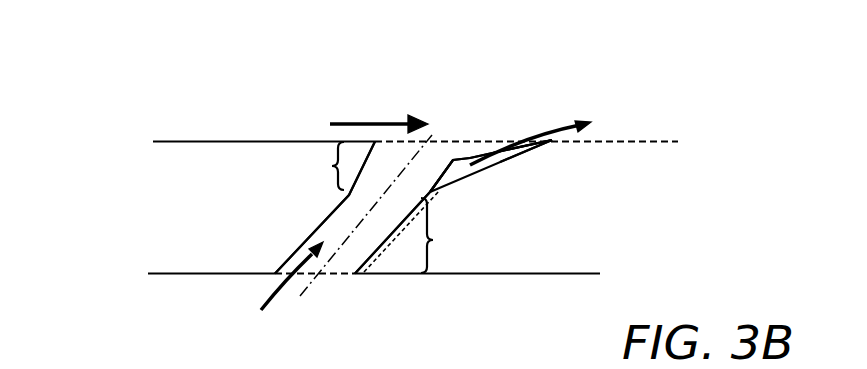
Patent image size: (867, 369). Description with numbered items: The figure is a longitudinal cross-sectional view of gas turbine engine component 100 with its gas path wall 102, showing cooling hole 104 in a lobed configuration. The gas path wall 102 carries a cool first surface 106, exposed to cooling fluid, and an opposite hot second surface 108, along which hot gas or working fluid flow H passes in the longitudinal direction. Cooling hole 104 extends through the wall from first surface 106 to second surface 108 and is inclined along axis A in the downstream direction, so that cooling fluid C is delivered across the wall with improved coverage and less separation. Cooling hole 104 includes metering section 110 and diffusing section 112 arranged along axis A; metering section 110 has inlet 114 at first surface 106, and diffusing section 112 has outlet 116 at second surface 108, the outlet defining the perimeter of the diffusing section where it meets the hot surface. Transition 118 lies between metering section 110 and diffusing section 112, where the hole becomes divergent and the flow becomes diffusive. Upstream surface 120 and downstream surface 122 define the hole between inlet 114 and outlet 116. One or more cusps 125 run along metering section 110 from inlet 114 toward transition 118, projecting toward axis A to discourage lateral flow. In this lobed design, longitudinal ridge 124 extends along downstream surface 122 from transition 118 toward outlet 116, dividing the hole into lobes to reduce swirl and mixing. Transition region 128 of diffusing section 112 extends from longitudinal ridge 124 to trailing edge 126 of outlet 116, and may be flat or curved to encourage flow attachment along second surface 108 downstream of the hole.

The gas turbine engine component 100 is at (86, 97).
The gas path wall 102 is at (237, 190).
The cooling hole 104 is at (397, 224).
The first surface 106 is at (511, 275).
The second surface 108 is at (240, 141).
The metering section 110 is at (448, 235).
The diffusing section 112 is at (317, 166).
The inlet 114 is at (334, 278).
The outlet 116 is at (503, 139).
The transition 118 is at (341, 196).
The upstream surface 120 is at (292, 250).
The downstream surface 122 is at (477, 170).
The longitudinal ridge 124 is at (453, 159).
The cusp 125 is at (372, 265).
The trailing edge 126 is at (548, 143).
The transition region 128 is at (480, 156).